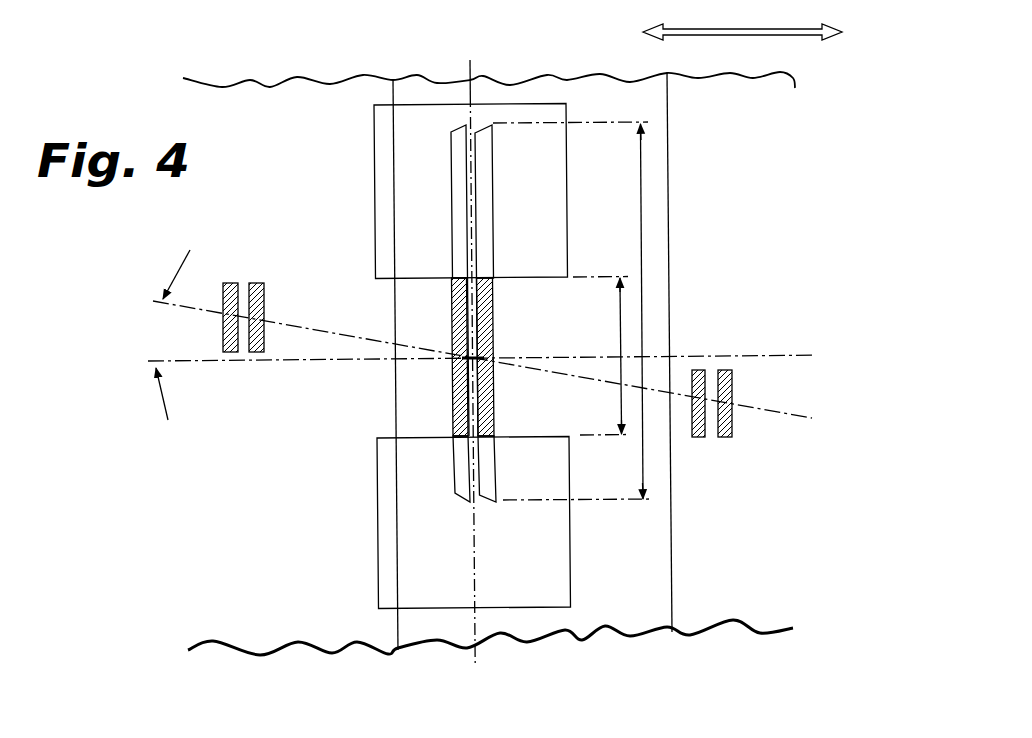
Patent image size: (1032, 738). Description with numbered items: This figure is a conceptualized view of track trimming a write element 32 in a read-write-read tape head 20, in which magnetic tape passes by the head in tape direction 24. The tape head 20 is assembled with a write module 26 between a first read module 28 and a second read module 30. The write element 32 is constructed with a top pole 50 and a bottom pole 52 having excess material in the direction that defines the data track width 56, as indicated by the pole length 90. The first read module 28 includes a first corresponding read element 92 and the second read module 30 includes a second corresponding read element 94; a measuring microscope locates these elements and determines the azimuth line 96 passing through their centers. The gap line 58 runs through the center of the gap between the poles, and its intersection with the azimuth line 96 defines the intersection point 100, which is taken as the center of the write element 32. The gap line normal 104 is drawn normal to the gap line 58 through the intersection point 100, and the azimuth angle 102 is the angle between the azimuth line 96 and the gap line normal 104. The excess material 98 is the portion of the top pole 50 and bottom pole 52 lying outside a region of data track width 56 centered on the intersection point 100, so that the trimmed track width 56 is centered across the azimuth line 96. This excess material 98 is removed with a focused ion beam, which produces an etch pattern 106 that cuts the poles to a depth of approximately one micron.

The tape head 20 is at (322, 666).
The tape direction 24 is at (768, 33).
The write module 26 is at (513, 640).
The first read module 28 is at (260, 657).
The second read module 30 is at (712, 635).
The write element 32 is at (448, 378).
The top pole 50 is at (495, 330).
The bottom pole 52 is at (451, 330).
The data track width 56 is at (618, 340).
The gap line 58 is at (477, 518).
The pole length 90 is at (638, 205).
The first corresponding read element 92 is at (242, 278).
The second corresponding read element 94 is at (722, 345).
The azimuth line 96 is at (297, 325).
The excess material 98 is at (439, 205).
The intersection point 100 is at (478, 360).
The azimuth angle 102 is at (160, 400).
The gap line normal 104 is at (297, 363).
The etch pattern 106 is at (374, 183).